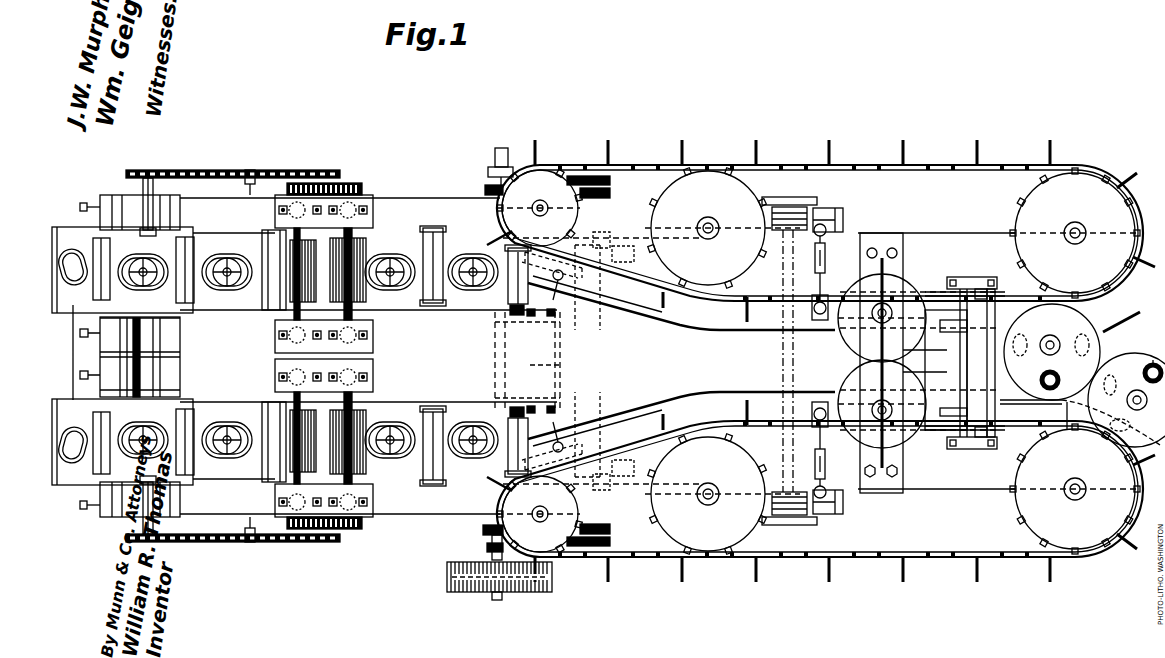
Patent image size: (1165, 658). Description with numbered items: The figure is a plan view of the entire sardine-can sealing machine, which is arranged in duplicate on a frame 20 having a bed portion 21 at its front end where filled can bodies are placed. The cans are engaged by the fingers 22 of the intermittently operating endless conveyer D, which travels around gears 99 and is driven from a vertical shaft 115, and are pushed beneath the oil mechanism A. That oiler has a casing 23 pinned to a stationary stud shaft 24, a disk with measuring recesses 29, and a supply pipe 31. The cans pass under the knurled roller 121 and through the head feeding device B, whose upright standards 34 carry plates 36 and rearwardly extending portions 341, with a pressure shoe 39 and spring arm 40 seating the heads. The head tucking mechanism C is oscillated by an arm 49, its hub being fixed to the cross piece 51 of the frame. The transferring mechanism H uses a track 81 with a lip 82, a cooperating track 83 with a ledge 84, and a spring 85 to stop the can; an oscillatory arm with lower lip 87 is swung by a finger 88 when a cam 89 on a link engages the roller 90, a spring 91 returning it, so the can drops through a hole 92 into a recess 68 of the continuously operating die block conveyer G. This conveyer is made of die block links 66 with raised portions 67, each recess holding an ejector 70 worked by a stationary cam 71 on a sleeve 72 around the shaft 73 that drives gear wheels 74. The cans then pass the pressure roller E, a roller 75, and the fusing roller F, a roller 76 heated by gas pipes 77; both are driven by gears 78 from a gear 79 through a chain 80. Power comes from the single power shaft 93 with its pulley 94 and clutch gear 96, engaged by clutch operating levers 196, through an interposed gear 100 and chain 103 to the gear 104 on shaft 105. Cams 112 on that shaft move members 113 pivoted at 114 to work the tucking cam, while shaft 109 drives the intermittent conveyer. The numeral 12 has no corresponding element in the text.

The shaft 12 is at (881, 362).
The frame 20 is at (945, 232).
The bed portion 21 is at (570, 495).
The fingers or flights 22 is at (1048, 146).
The casing 23 is at (1080, 422).
The stationary stud shaft 24 is at (1047, 350).
The recesses 29 is at (1067, 364).
The pipe 31 is at (1060, 380).
The upright standards 34 is at (968, 386).
The rearwardly extending portion 341 is at (949, 363).
The plates 36 is at (985, 290).
The pressure shoe 39 is at (938, 440).
The spring arm 40 is at (962, 290).
The arm 49 is at (835, 345).
The cross piece 51 is at (882, 361).
The die block links 66 is at (170, 243).
The raised portions 67 is at (135, 258).
The recesses 68 is at (68, 350).
The knockout or ejector 70 is at (393, 270).
The stationary cam 71 is at (92, 285).
The sleeve 72 is at (128, 205).
The shaft 73 is at (143, 186).
The gear wheels 74 is at (85, 232).
The roller 75 is at (370, 295).
The roller 76 is at (275, 395).
The pipes 77 is at (262, 290).
The gears 78 is at (340, 183).
The gear 79 is at (147, 170).
The chain 80 is at (208, 170).
The track 81 is at (660, 380).
The lip 82 is at (668, 400).
The track 83 is at (613, 275).
The ledge 84 is at (610, 270).
The spring 85 is at (520, 262).
The lower lip 87 is at (520, 305).
The finger 88 is at (540, 410).
The cam 89 is at (425, 312).
The roller 90 is at (545, 305).
The spring 91 is at (541, 361).
The hole 92 is at (598, 300).
The power shaft 93 is at (500, 362).
The pulley 94 is at (455, 582).
The gear 96 is at (482, 530).
The clutch operating levers 196 is at (487, 547).
The gears 99 is at (818, 361).
The interposed gear 100 is at (611, 195).
The chain 103 is at (611, 182).
The gear 104 is at (573, 165).
The shaft 105 is at (562, 365).
The shaft 109 is at (790, 198).
The cams 112 is at (818, 204).
The members 113 is at (830, 520).
The pivot 114 is at (843, 211).
The vertical shaft 115 is at (724, 488).
The roller 121 is at (1000, 295).
The oil mechanism A is at (1084, 375).
The head feeding device B is at (972, 363).
The head tucking mechanism C is at (925, 359).
The endless intermittently operating conveyer D is at (1112, 178).
The pressure roller E is at (372, 245).
The fusing or heating roller F is at (304, 374).
The continuously operating die block conveyer G is at (232, 240).
The transferring mechanism H is at (580, 300).